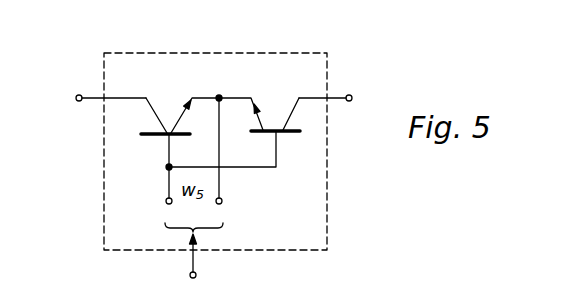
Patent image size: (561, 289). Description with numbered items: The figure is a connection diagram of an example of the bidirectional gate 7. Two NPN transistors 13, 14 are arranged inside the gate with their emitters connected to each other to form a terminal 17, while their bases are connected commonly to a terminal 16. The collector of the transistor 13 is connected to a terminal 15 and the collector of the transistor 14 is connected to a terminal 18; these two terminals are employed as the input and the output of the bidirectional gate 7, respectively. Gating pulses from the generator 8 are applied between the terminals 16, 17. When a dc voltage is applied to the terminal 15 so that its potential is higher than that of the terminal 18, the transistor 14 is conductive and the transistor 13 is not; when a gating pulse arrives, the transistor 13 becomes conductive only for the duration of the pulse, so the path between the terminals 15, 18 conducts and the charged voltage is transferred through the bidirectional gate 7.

The bidirectional gate 7 is at (263, 58).
The generator 8 is at (302, 286).
The NPN transistor 13 is at (152, 166).
The NPN transistor 14 is at (304, 161).
The terminal 15 is at (79, 95).
The terminal 16 is at (166, 204).
The terminal 17 is at (222, 204).
The terminal 18 is at (352, 96).